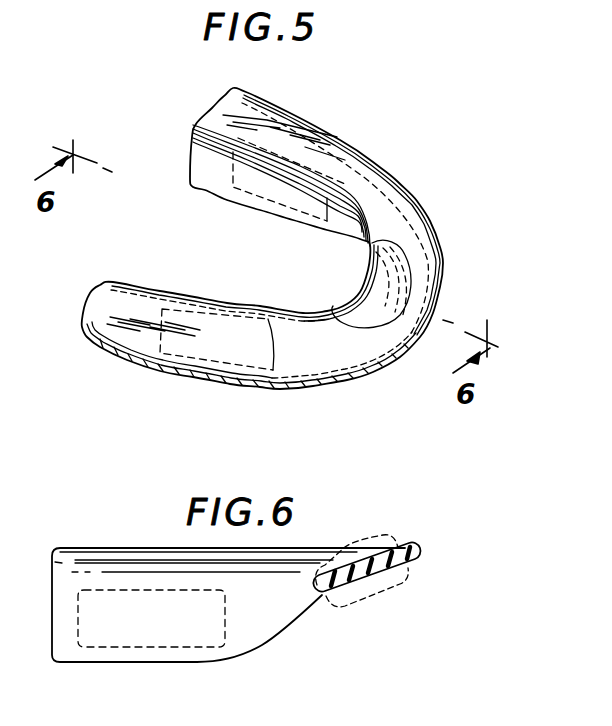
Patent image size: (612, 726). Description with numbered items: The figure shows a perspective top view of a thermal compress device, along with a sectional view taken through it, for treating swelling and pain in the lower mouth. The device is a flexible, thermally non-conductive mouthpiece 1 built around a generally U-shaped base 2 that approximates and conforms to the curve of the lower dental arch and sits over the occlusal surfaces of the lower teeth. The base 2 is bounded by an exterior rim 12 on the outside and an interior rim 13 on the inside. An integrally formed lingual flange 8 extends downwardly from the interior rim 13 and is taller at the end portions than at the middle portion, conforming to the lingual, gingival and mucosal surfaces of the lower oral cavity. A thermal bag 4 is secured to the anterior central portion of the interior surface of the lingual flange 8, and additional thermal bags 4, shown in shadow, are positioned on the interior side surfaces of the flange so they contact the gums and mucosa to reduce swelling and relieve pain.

In FIG. 5, the mouthpiece 1 is at (405, 166).
In FIG. 5, the U-shaped base 2 is at (408, 212).
In FIG. 5, the thermal bag 4 is at (232, 322).
In FIG. 6, the thermal bag 4 is at (393, 606).
In FIG. 5, the lingual flange 8 is at (197, 160).
In FIG. 6, the lingual flange 8 is at (270, 623).
In FIG. 5, the exterior rim 12 is at (443, 263).
In FIG. 5, the interior rim 13 is at (295, 312).